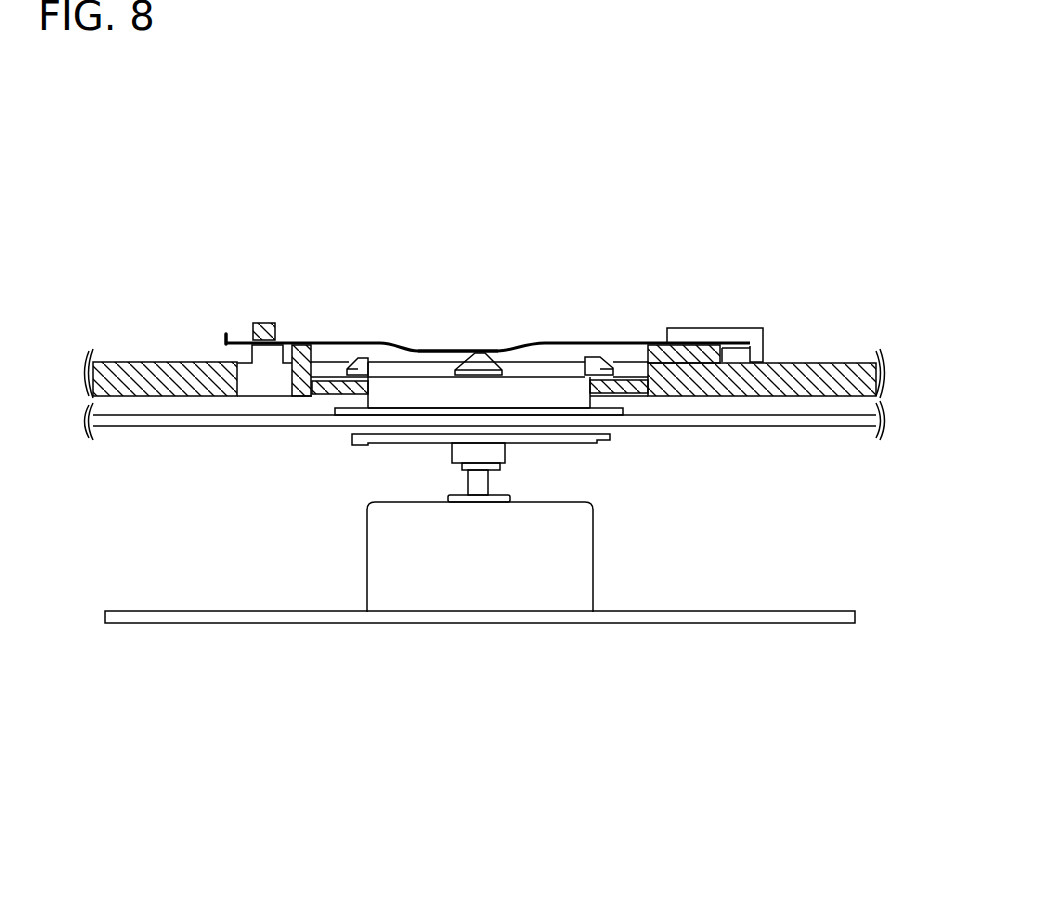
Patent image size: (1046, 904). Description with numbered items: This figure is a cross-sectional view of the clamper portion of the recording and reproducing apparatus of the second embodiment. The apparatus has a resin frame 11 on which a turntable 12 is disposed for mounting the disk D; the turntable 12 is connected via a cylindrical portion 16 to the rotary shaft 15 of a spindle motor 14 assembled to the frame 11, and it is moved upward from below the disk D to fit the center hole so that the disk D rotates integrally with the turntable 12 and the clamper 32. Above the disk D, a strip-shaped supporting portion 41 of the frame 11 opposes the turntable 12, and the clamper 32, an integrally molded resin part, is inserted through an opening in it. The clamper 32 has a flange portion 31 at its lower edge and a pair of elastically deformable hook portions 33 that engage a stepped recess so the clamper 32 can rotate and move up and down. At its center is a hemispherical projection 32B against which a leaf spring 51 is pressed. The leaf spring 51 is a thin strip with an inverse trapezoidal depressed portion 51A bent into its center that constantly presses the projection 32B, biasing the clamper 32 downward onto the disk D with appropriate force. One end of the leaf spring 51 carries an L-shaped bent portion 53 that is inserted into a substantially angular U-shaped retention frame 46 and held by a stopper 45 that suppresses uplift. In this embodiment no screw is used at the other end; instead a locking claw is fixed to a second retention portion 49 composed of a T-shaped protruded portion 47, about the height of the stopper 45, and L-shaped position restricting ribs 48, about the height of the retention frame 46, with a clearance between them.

The disk D is at (127, 422).
The frame 11 is at (825, 619).
The turntable 12 is at (353, 435).
The spindle motor 14 is at (551, 585).
The rotary shaft 15 is at (477, 488).
The cylindrical portion 16 is at (467, 457).
The flange portion 31 is at (335, 417).
The clamper 32 is at (412, 392).
The hemispherical projection 32B is at (482, 352).
The hook portions 33 is at (596, 348).
The supporting portion 41 is at (128, 372).
The stopper 45 is at (300, 345).
The retention frame 46 is at (262, 323).
The protruded portion 47 is at (690, 355).
The position restricting rib 48 is at (738, 327).
The second retention portion 49 is at (762, 252).
The leaf spring 51 is at (633, 341).
The depressed portion 51A is at (438, 351).
The bent portion 53 is at (225, 343).